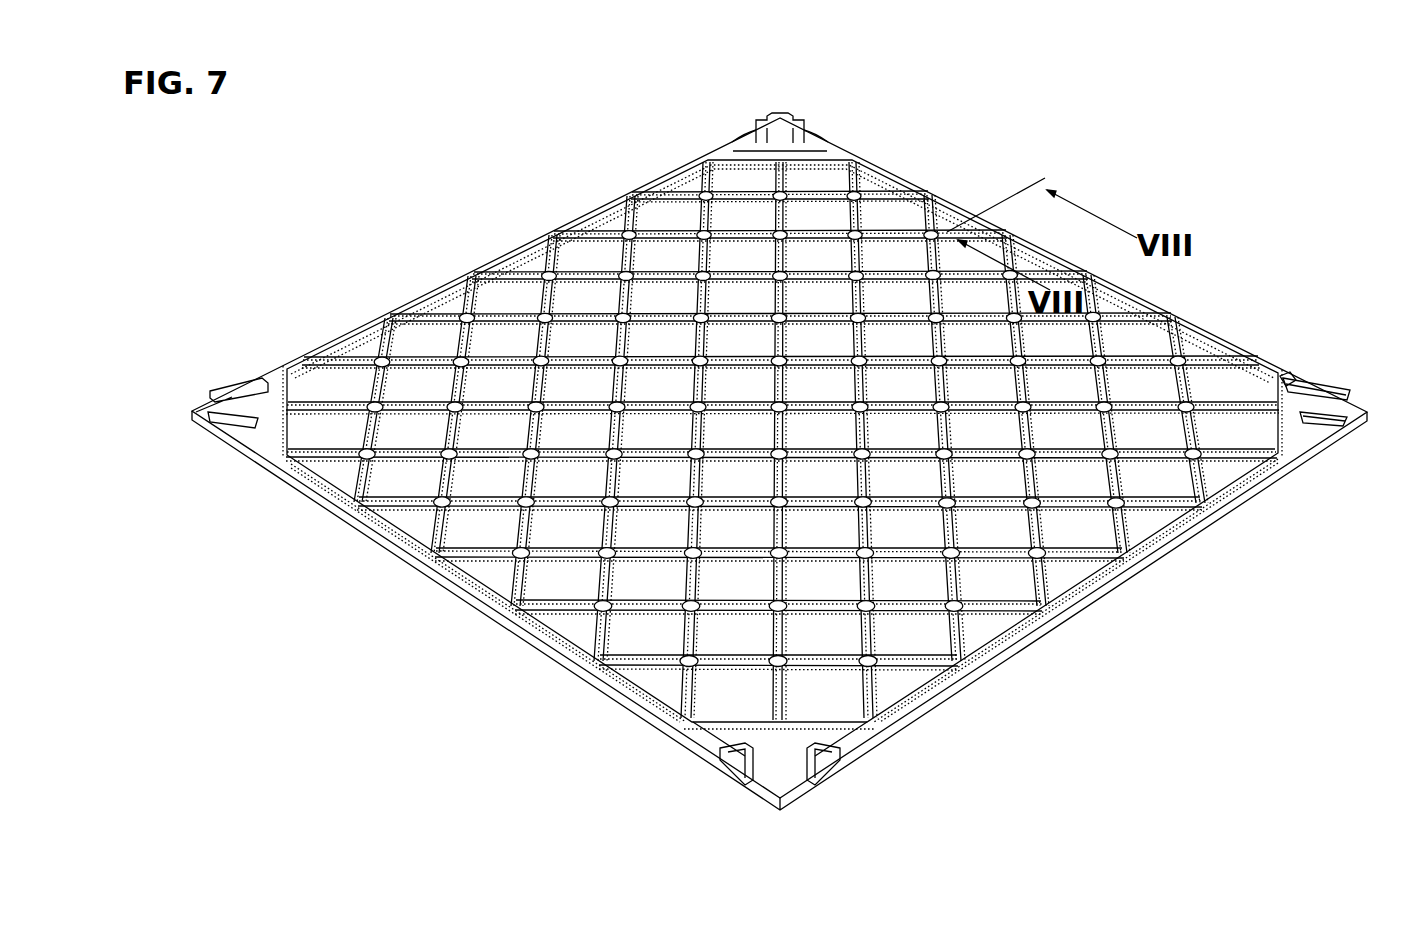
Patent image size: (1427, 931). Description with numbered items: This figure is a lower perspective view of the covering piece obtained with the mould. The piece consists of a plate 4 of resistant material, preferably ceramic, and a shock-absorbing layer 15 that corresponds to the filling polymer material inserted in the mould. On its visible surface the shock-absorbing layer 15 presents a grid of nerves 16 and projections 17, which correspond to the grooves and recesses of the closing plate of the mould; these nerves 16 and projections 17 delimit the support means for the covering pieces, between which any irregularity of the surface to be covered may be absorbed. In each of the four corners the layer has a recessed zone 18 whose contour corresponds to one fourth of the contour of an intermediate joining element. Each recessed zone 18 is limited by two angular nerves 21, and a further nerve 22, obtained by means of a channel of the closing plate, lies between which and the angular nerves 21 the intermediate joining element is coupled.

The plate 4 is at (935, 704).
The shock-absorbing layer 15 is at (380, 522).
The nerves 16 is at (582, 230).
The projections 17 is at (466, 312).
The recessed zones 18 is at (1350, 405).
The angular nerves 21 is at (1335, 388).
The nerve 22 is at (1287, 372).